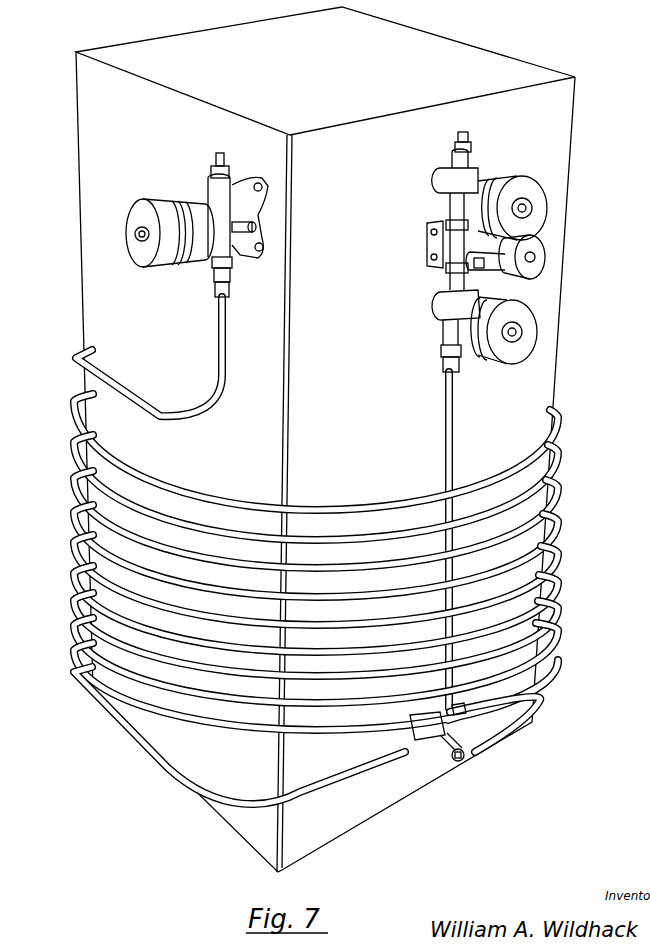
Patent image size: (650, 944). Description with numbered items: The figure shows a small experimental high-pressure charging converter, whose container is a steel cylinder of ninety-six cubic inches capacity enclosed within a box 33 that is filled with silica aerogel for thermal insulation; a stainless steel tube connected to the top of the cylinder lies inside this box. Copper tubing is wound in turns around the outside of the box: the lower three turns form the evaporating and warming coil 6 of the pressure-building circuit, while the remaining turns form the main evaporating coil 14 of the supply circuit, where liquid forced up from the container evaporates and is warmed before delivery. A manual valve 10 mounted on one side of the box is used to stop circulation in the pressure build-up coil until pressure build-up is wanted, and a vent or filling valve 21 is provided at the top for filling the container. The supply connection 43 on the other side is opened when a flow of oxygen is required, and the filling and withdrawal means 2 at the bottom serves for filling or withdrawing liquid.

The box 33 is at (503, 72).
The supply connection 43 is at (127, 225).
The vent or filling valve 21 is at (543, 197).
The manual valve 10 is at (537, 323).
The main evaporating coil 14 is at (557, 448).
The evaporating and warming coil 6 is at (540, 693).
The filling and withdrawal means 2 is at (472, 757).